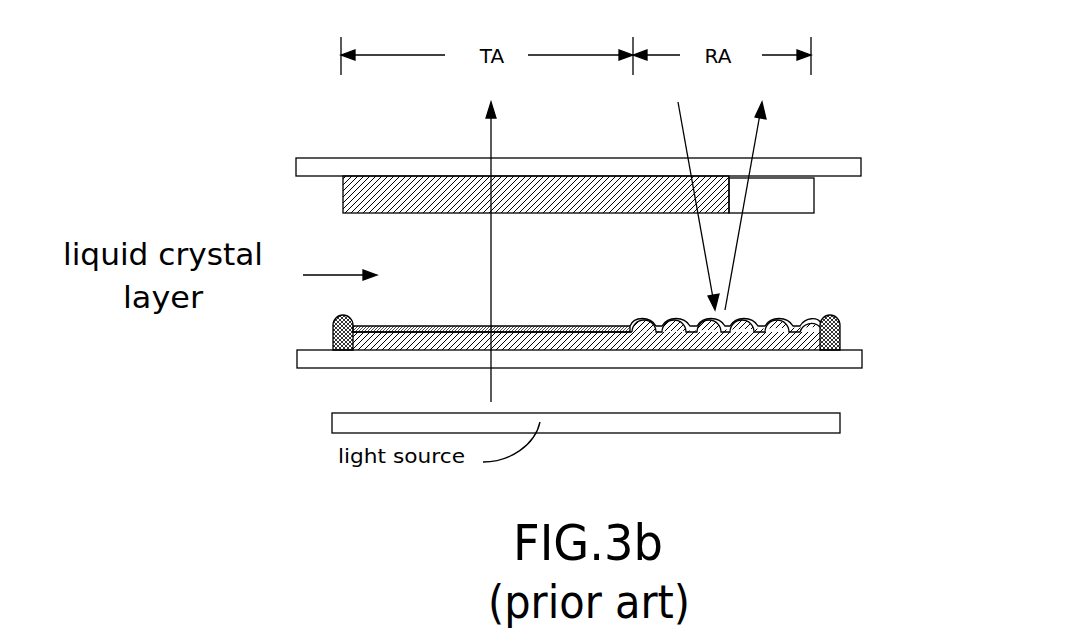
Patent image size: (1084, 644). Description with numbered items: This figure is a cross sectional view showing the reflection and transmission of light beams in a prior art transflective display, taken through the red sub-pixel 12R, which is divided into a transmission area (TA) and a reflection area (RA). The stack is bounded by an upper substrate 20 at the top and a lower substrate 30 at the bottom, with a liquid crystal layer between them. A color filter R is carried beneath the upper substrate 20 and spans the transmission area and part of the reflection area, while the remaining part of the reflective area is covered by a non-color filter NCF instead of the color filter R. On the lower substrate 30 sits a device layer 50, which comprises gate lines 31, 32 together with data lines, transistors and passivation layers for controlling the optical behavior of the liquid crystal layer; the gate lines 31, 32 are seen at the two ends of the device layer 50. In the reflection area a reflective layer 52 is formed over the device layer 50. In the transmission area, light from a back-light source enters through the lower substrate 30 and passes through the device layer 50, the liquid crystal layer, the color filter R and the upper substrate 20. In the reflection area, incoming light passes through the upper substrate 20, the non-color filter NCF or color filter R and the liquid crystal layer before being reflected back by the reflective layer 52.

The upper substrate 20 is at (363, 162).
The color filter R is at (343, 193).
The non-color filter NCF is at (793, 207).
The sub-pixel 12R is at (902, 144).
The lower substrate 30 is at (345, 358).
The device layer 50 is at (565, 330).
The reflective layer 52 is at (740, 327).
The gate line 31 is at (840, 327).
The gate line 32 is at (333, 322).